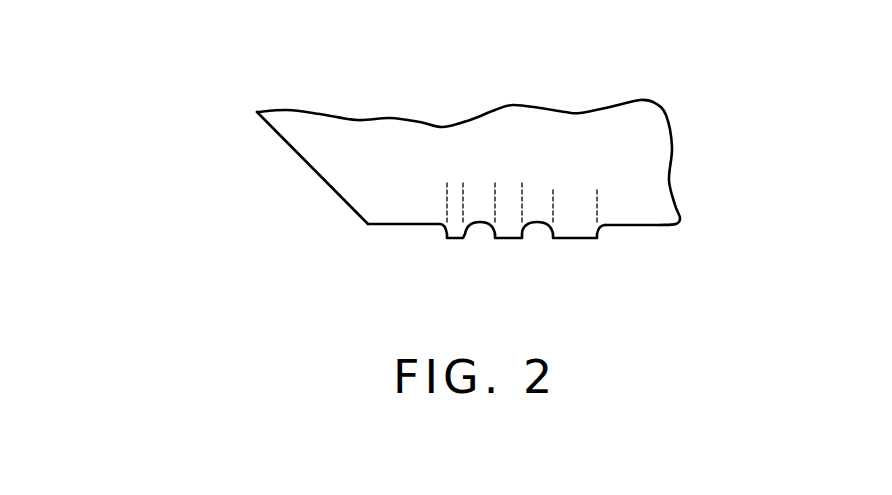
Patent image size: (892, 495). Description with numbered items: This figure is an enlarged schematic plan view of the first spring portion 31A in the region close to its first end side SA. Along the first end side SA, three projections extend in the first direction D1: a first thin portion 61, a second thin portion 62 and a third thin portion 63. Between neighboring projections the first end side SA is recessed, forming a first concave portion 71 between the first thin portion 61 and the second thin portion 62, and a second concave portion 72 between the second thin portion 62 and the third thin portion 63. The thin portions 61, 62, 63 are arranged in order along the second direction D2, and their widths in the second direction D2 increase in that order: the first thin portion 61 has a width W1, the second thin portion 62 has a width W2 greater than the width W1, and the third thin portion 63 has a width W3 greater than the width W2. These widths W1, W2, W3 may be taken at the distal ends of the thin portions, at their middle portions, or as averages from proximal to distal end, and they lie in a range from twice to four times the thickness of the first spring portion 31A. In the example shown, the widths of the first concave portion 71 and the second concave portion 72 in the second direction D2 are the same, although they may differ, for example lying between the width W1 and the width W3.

The first spring portion 31A is at (322, 178).
The first thin portion 61 is at (452, 240).
The second thin portion 62 is at (507, 240).
The third thin portion 63 is at (575, 240).
The first concave portion 71 is at (480, 224).
The second concave portion 72 is at (537, 224).
The first end side SA is at (655, 248).
The width of the first thin portion W1 is at (485, 192).
The width of the second thin portion W2 is at (515, 192).
The width of the third thin portion W3 is at (590, 192).
The first direction D1 is at (205, 185).
The second direction D2 is at (238, 155).